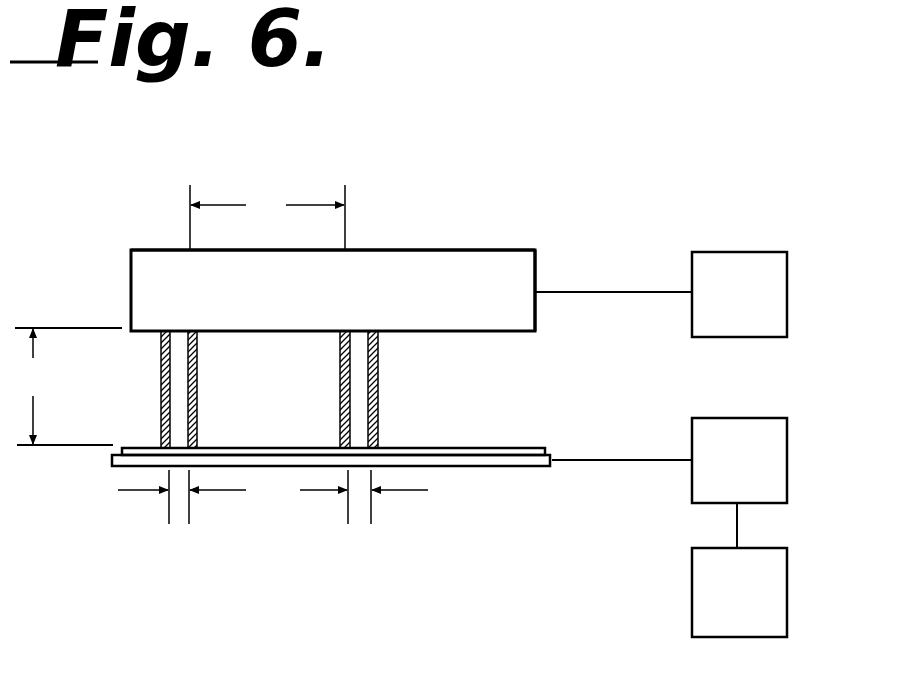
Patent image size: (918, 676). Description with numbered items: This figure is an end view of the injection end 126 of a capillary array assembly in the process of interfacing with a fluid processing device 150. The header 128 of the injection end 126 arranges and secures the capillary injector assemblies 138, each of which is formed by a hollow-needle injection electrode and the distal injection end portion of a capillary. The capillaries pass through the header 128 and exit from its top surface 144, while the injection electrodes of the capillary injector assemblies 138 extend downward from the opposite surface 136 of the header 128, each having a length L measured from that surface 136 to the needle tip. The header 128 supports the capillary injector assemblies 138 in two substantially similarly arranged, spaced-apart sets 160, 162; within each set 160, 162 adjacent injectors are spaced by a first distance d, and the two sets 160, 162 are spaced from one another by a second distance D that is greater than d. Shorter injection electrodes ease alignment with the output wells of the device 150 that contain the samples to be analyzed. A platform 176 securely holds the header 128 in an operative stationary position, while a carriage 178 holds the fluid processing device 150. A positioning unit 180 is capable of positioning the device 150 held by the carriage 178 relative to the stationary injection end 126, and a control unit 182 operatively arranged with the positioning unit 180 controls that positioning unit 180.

The injection end 126 is at (99, 244).
The header 128 is at (383, 268).
The top surface 144 is at (490, 251).
The surface 136 is at (515, 335).
The capillary injector assembly 138 is at (197, 410).
The fluid processing device 150 is at (536, 449).
The carriage 178 is at (531, 468).
The first set of capillary injector assemblies 160 is at (200, 533).
The second set of capillary injector assemblies 162 is at (376, 533).
The platform 176 is at (661, 294).
The positioning unit 180 is at (669, 460).
The control unit 182 is at (739, 570).